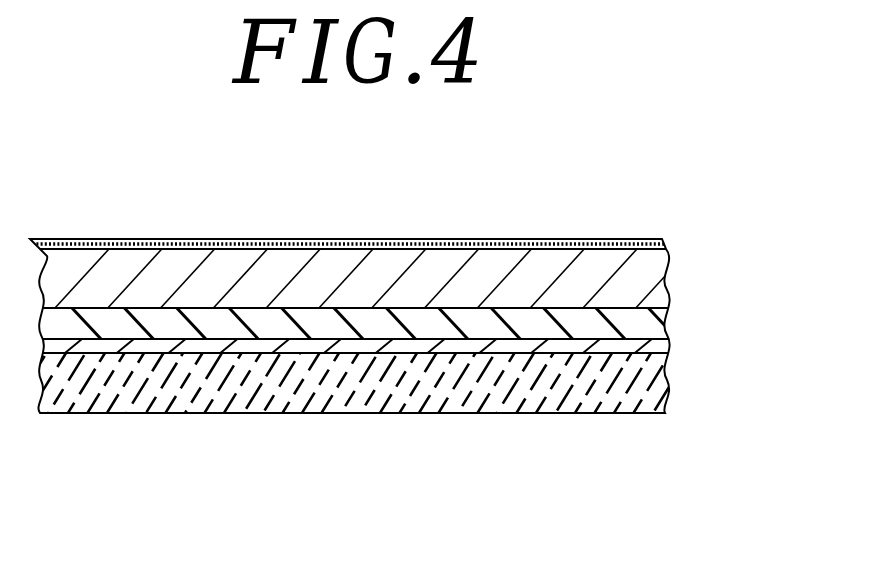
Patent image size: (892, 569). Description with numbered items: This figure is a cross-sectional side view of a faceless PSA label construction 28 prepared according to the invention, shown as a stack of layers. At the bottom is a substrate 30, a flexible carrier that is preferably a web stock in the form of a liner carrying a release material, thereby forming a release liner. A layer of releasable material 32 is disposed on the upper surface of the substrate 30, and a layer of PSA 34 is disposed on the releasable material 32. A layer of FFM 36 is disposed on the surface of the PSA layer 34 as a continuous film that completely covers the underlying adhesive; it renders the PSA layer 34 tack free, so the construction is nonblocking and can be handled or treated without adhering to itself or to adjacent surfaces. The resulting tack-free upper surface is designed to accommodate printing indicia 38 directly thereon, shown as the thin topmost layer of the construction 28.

The faceless PSA label construction 28 is at (555, 198).
The substrate 30 is at (667, 372).
The layer of releasable material 32 is at (637, 347).
The layer of PSA 34 is at (635, 320).
The layer of FFM 36 is at (635, 276).
The printing indicia 38 is at (130, 240).